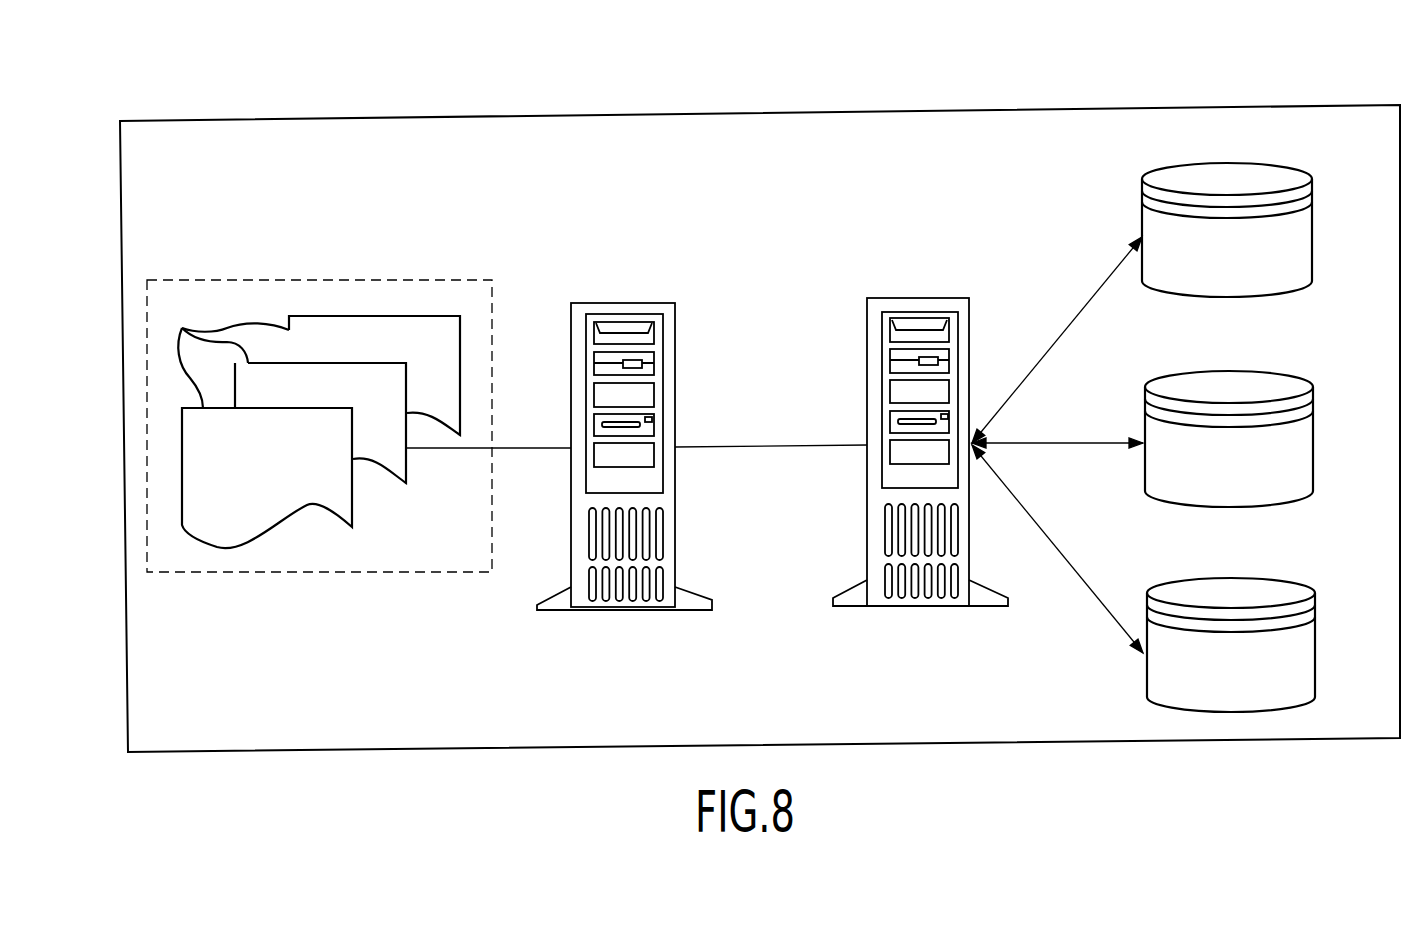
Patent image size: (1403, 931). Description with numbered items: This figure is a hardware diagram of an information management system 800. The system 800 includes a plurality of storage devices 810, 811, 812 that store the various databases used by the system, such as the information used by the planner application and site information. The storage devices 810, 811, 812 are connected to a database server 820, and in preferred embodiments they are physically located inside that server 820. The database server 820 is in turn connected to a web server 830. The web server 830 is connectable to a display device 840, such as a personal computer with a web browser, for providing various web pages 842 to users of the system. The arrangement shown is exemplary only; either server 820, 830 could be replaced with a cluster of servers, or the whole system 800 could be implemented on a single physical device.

The system 800 is at (1121, 69).
The storage device 810 is at (1277, 180).
The storage device 811 is at (1278, 388).
The storage device 812 is at (1280, 595).
The database server 820 is at (917, 298).
The web server 830 is at (623, 303).
The display device 840 is at (188, 280).
The AMS web site pages 842 is at (311, 422).